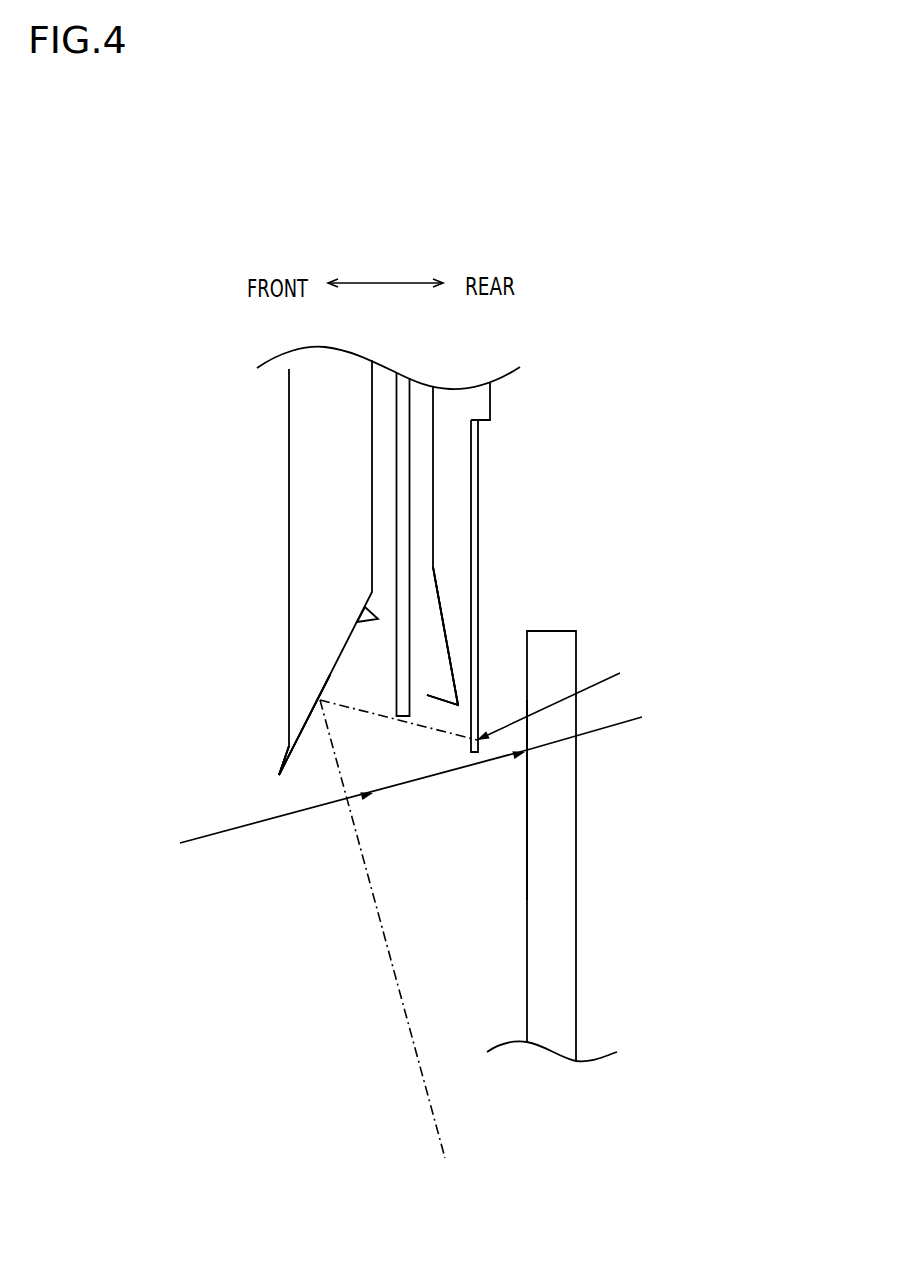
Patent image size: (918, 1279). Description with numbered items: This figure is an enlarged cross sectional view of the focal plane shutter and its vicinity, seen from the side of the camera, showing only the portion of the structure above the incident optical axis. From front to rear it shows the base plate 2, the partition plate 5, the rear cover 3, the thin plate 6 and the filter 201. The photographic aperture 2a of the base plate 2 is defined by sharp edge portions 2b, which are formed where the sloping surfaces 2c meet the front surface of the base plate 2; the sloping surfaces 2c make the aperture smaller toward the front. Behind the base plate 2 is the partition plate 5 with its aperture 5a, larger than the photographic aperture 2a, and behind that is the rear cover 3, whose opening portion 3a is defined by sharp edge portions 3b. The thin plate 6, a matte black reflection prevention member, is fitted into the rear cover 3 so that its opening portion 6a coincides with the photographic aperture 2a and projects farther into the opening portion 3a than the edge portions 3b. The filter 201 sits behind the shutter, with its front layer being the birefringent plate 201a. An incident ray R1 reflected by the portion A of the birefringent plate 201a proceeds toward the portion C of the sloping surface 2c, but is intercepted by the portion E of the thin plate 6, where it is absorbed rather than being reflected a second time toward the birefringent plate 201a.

The base plate 2 is at (312, 432).
The photographic aperture 2a is at (279, 775).
The edge portions 2b is at (279, 775).
The sloping surfaces 2c is at (378, 619).
The rear cover 3 is at (472, 402).
The opening portion 3a is at (427, 695).
The edge portions 3b is at (427, 695).
The partition plate 5 is at (402, 395).
The aperture 5a is at (405, 716).
The thin plate 6 is at (480, 515).
The opening portion 6a is at (476, 752).
The filter 201 is at (605, 888).
The birefringent plate 201a is at (558, 800).
The portion C of the sloping surface C is at (320, 700).
The portion E of the thin plate E is at (561, 695).
The portion A of the birefringent plate A is at (589, 728).
The incident ray R1 is at (218, 833).